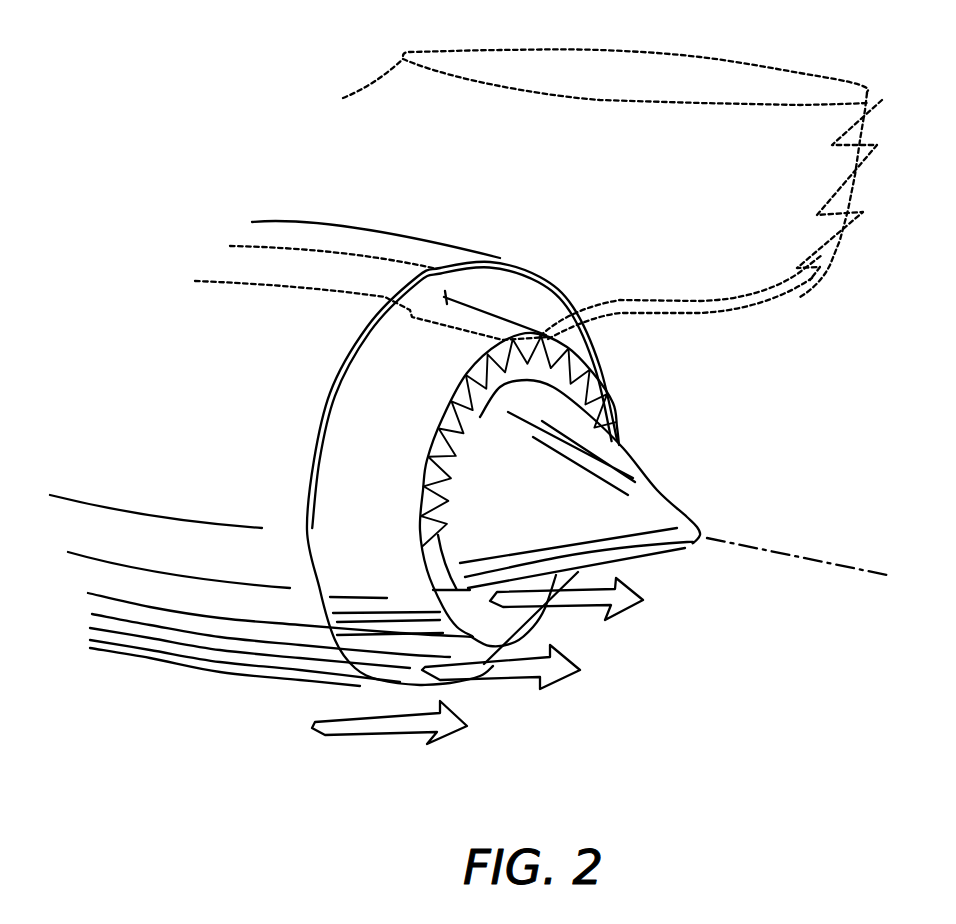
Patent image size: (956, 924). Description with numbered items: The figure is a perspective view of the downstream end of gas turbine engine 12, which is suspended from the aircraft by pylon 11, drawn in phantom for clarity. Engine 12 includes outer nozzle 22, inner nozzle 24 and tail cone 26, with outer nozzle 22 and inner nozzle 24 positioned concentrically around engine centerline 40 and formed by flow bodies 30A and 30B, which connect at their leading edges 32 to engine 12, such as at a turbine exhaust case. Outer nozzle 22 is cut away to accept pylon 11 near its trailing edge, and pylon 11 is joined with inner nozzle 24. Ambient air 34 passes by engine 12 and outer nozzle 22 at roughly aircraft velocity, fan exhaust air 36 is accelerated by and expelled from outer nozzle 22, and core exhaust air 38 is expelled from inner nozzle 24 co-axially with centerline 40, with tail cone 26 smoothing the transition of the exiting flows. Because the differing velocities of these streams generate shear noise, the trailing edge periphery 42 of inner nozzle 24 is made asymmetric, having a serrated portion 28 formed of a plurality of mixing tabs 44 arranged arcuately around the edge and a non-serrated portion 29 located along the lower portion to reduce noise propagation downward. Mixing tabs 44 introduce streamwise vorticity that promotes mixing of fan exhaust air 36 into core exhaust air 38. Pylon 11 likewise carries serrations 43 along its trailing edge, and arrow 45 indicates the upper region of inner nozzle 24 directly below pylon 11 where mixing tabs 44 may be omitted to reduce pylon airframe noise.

The pylon 11 is at (405, 128).
The gas turbine engine 12 is at (557, 249).
The outer nozzle 22 is at (238, 200).
The inner nozzle 24 is at (537, 302).
The tail cone 26 is at (640, 500).
The serrated portion 28 is at (576, 390).
The non-serrated portion 29 is at (492, 629).
The flow body 30A is at (230, 480).
The flow body 30B is at (370, 548).
The leading edges 32 is at (114, 262).
The ambient air 34 is at (400, 735).
The fan exhaust air 36 is at (513, 680).
The core exhaust air 38 is at (592, 590).
The engine centerline 40 is at (845, 563).
The trailing edge periphery 42 is at (627, 377).
The serrations 43 is at (861, 253).
The mixing tabs 44 is at (443, 430).
The arrow 45 is at (451, 303).